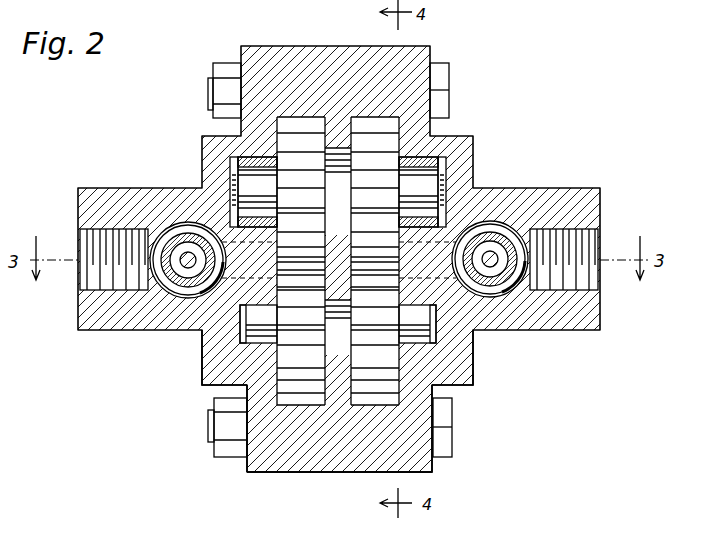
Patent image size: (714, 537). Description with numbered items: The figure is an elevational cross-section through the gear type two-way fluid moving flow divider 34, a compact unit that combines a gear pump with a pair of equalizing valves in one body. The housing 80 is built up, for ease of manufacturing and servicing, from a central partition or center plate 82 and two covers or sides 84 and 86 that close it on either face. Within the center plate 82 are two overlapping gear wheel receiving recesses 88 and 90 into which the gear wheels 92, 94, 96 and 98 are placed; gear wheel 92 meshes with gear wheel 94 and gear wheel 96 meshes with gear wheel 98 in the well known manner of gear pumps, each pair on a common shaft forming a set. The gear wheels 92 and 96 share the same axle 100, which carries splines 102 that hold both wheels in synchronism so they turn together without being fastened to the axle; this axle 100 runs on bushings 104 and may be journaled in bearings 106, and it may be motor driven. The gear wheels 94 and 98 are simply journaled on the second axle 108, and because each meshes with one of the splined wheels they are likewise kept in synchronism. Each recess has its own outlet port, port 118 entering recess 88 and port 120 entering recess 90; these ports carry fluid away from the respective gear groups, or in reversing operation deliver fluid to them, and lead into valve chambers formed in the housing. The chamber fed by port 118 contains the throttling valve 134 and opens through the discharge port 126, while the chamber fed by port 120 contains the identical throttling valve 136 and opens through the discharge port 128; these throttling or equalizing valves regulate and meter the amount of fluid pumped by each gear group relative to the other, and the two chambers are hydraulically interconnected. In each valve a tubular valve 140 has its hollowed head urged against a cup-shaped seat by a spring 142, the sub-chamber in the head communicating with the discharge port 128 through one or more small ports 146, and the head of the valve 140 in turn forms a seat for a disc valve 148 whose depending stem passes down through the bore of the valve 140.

The gear type two-way fluid moving flow divider 34 is at (443, 50).
The housing 80 is at (238, 477).
The center plate 82 is at (303, 473).
The cover 84 is at (205, 380).
The cover 86 is at (476, 381).
The gear wheel receiving recess 88 is at (245, 392).
The gear wheel receiving recess 90 is at (434, 392).
The gear wheel 92 is at (301, 188).
The gear wheel 94 is at (301, 332).
The gear wheel 96 is at (375, 188).
The gear wheel 98 is at (375, 332).
The axle 100 is at (246, 186).
The splines 102 is at (340, 201).
The bushings 104 is at (238, 158).
The bearings 106 is at (242, 178).
The axle 108 is at (342, 323).
The outlet port 118 is at (258, 324).
The outlet port 120 is at (418, 324).
The discharge port 126 is at (90, 280).
The discharge port 128 is at (598, 278).
The throttling valve 134 is at (158, 222).
The throttling valve 136 is at (496, 194).
The valve 140 is at (190, 285).
The spring 142 is at (183, 270).
The small ports 146 is at (506, 264).
The disc valve 148 is at (492, 270).